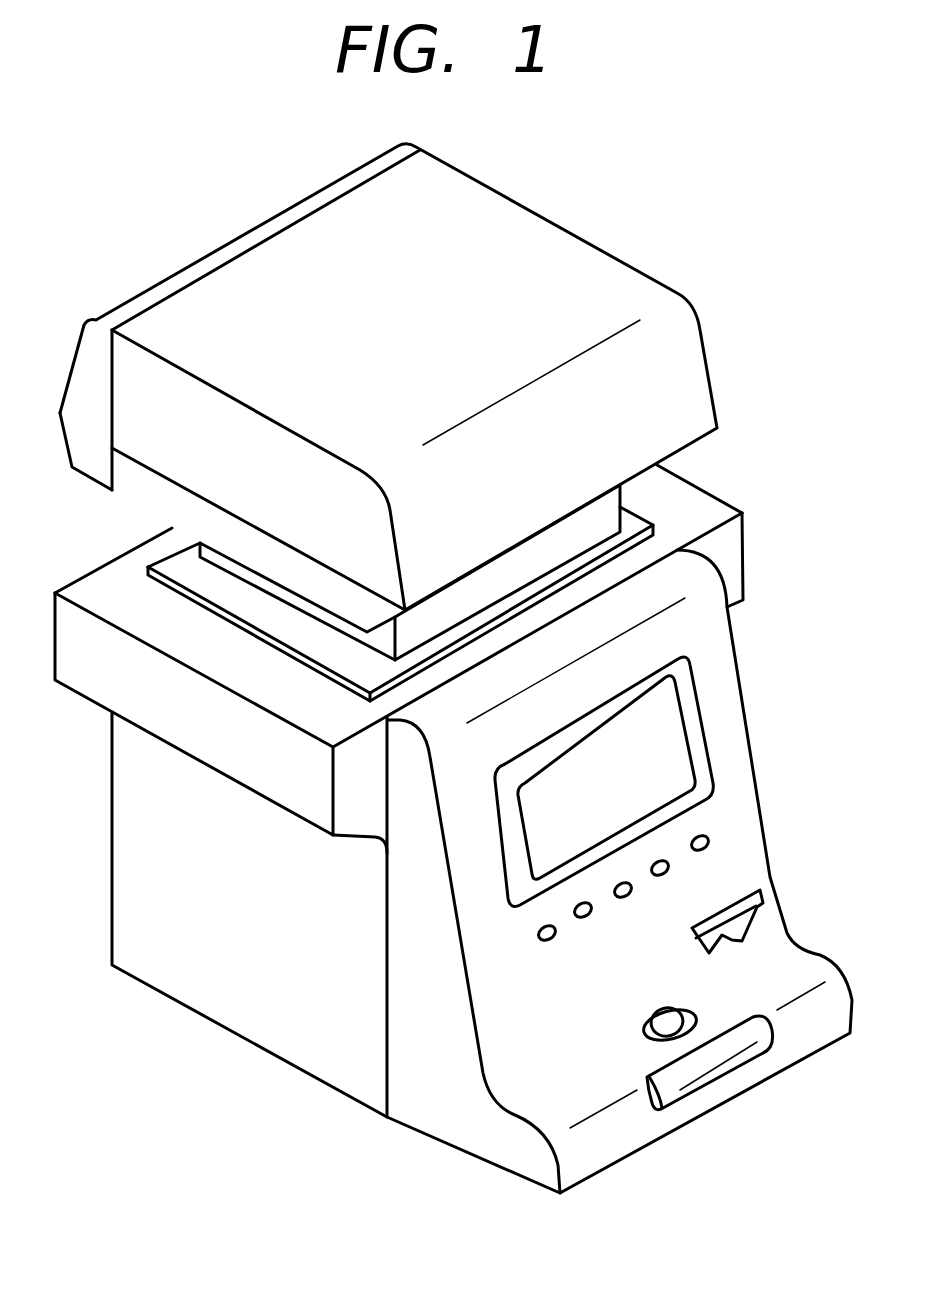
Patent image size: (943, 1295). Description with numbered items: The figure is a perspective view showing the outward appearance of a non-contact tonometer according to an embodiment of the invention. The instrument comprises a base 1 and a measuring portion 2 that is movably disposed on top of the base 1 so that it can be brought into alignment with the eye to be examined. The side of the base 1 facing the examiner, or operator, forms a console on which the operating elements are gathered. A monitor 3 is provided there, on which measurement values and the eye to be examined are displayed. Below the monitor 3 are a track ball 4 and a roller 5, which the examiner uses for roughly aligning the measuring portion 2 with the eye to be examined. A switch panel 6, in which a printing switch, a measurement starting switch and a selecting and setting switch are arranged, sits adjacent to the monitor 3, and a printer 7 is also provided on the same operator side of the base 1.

The base 1 is at (287, 1033).
The measuring portion 2 is at (503, 245).
The monitor 3 is at (678, 733).
The track ball 4 is at (663, 1023).
The roller 5 is at (720, 1055).
The switch panel 6 is at (713, 837).
The printer 7 is at (747, 927).